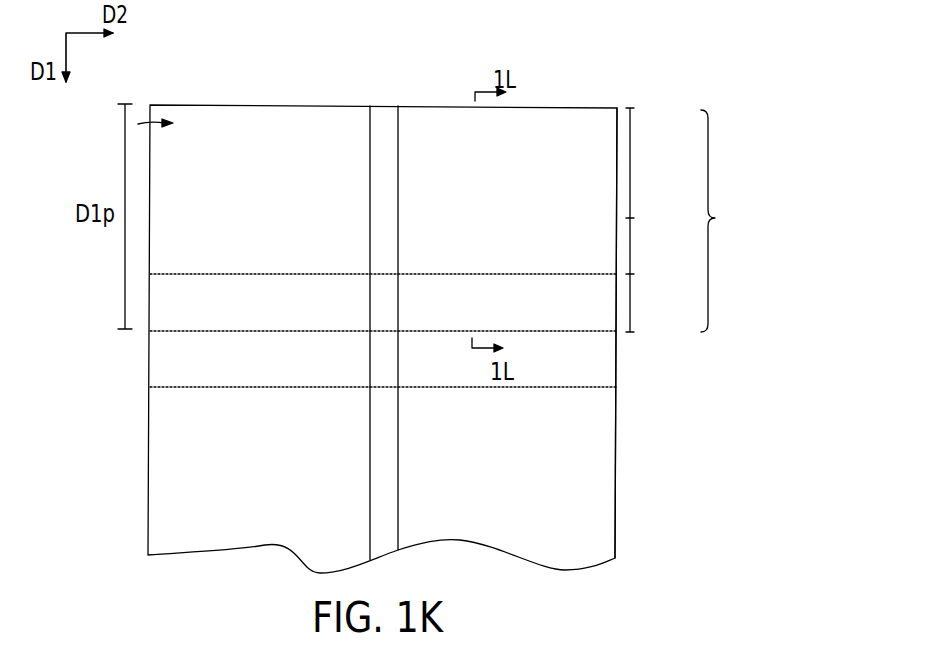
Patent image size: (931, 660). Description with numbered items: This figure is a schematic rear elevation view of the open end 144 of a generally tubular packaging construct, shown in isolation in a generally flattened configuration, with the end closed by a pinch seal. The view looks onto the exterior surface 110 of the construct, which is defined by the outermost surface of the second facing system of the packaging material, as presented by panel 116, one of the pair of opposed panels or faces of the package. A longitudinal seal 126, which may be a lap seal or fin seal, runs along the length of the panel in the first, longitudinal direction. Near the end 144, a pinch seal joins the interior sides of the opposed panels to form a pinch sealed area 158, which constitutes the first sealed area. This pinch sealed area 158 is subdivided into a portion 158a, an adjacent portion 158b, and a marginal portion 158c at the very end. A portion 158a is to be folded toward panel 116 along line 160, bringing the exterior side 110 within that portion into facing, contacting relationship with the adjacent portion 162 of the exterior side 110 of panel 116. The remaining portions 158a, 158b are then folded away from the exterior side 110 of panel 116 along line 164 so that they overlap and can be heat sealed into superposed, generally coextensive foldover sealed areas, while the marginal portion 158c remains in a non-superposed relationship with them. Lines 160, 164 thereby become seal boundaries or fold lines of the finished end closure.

The exterior surface 110 is at (222, 532).
The panel 116 is at (615, 456).
The longitudinal seal 126 is at (383, 483).
The open end 144 is at (752, 93).
The pinch sealed area 158 is at (726, 221).
The portion of the pinch sealed area 158a is at (653, 303).
The portion of the pinch sealed area 158b is at (653, 246).
The marginal portion of the pinch sealed area 158c is at (653, 163).
The line 160 is at (245, 331).
The adjacent portion 162 is at (162, 364).
The line 164 is at (245, 274).